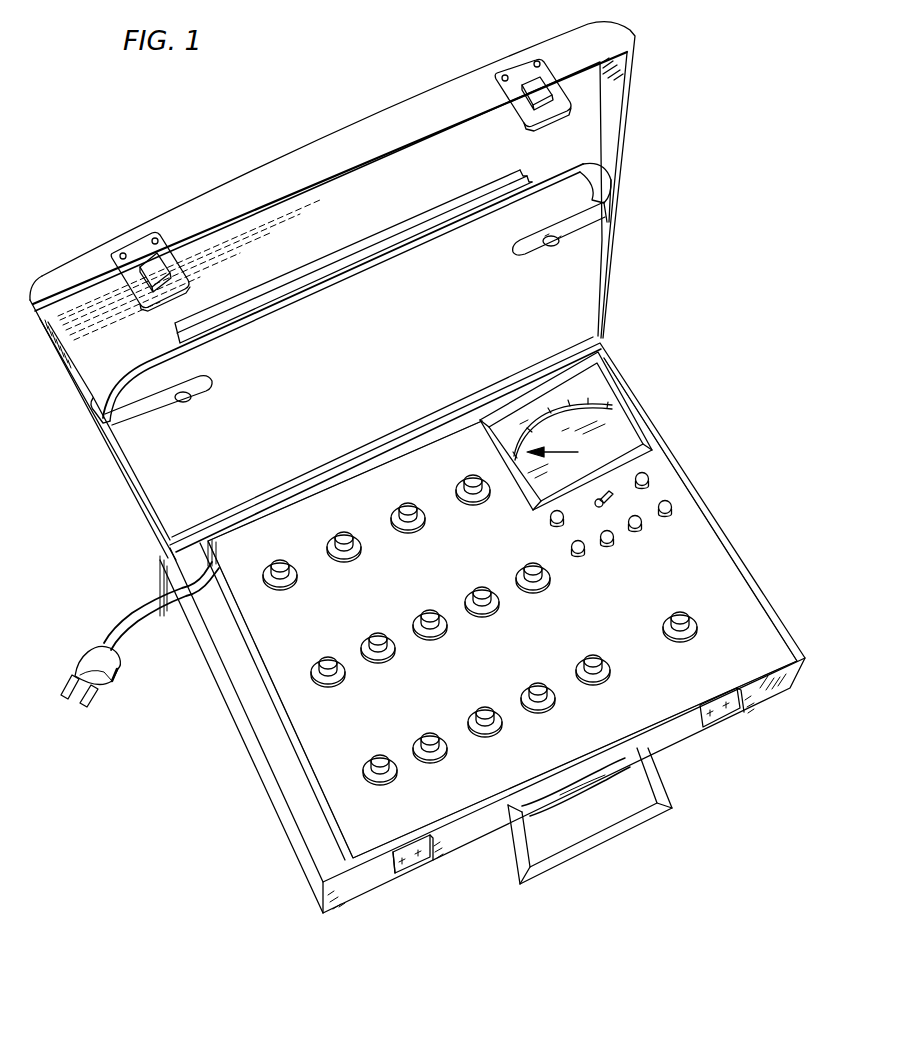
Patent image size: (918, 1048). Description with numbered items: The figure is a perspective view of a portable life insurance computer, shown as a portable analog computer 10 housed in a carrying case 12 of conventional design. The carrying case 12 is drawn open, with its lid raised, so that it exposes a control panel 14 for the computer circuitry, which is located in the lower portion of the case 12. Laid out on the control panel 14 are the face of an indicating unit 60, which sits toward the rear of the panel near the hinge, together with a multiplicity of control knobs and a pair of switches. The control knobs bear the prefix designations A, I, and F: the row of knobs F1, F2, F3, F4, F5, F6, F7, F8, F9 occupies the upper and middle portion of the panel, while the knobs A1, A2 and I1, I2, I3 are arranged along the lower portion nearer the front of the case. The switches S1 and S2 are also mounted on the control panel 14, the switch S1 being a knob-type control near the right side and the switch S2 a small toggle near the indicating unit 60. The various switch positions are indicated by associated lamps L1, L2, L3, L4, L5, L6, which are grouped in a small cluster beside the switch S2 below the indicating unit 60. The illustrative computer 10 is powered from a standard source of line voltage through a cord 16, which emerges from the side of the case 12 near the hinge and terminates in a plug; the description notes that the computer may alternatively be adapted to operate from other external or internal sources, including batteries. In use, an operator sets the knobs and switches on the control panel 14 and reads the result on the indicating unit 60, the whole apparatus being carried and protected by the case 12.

The portable analog computer 10 is at (216, 772).
The carrying case 12 is at (234, 190).
The control panel 14 is at (710, 545).
The cord 16 is at (90, 656).
The indicating unit 60 is at (497, 430).
The control knob F1 is at (326, 684).
The control knob F2 is at (376, 660).
The control knob F3 is at (428, 637).
The control knob F4 is at (480, 614).
The control knob F5 is at (531, 590).
The control knob F6 is at (278, 587).
The control knob F7 is at (342, 559).
The control knob F8 is at (406, 530).
The control knob F9 is at (471, 502).
The control knob A1 is at (380, 782).
The control knob A2 is at (428, 760).
The control knob I1 is at (483, 734).
The control knob I2 is at (536, 710).
The control knob I3 is at (591, 682).
The switch S1 is at (678, 639).
The switch S2 is at (599, 511).
The lamp L1 is at (578, 557).
The lamp L2 is at (607, 547).
The lamp L3 is at (635, 532).
The lamp L4 is at (665, 517).
The lamp L5 is at (557, 527).
The lamp L6 is at (642, 489).